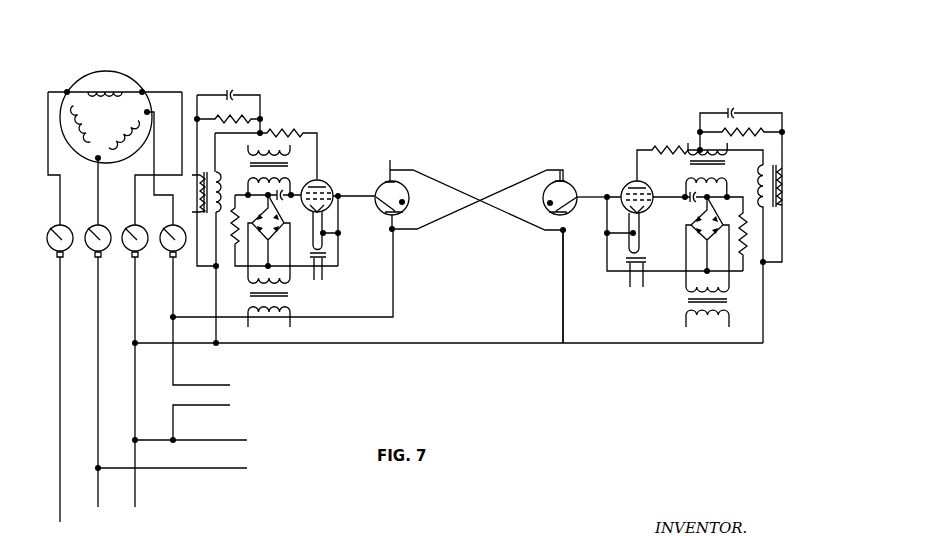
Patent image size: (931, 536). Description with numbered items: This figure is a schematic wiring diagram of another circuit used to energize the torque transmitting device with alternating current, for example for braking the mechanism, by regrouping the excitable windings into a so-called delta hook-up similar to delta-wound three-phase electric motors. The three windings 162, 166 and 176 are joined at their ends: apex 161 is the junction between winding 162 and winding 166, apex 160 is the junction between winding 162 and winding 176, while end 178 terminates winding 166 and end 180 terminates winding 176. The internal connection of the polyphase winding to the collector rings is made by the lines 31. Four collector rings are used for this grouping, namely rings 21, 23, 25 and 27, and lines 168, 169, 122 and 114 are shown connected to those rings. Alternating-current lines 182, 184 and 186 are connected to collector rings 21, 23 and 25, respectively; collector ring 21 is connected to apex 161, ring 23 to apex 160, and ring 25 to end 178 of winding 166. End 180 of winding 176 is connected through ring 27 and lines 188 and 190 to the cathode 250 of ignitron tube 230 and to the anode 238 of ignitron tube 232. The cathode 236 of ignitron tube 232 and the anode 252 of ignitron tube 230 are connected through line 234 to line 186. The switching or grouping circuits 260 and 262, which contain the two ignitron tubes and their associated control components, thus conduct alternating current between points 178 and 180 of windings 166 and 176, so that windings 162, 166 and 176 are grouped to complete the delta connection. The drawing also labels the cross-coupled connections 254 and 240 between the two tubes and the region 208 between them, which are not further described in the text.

The lines 31 is at (48, 165).
The apex 161 is at (67, 92).
The winding 166 is at (110, 87).
The end of winding 166 178 is at (142, 92).
The end of winding 176 180 is at (147, 112).
The winding 176 is at (130, 123).
The winding 162 is at (93, 155).
The apex 160 is at (98, 158).
The collector ring 21 is at (52, 232).
The collector ring 23 is at (88, 232).
The collector ring 25 is at (125, 232).
The collector ring 27 is at (163, 232).
The alternating-current line 182 is at (58, 499).
The alternating-current line 184 is at (96, 493).
The alternating-current line 186 is at (135, 493).
The line 188 is at (172, 289).
The line 190 is at (182, 316).
The line 168 is at (226, 385).
The line 169 is at (226, 405).
The line 122 is at (191, 440).
The line 114 is at (188, 468).
The line 234 is at (414, 343).
The switching or grouping circuit 260 is at (286, 218).
The switching or grouping circuit 262 is at (682, 225).
The bistable flip-flop circuit 208 is at (479, 242).
The ignitron tube 230 is at (378, 185).
The ignitron tube 232 is at (580, 188).
The anode 252 is at (401, 156).
The cathode 250 is at (388, 214).
The anode 238 is at (565, 180).
The cathode 236 is at (563, 230).
The cross-coupling conductor 254 is at (469, 184).
The cross-coupling conductor 240 is at (486, 186).